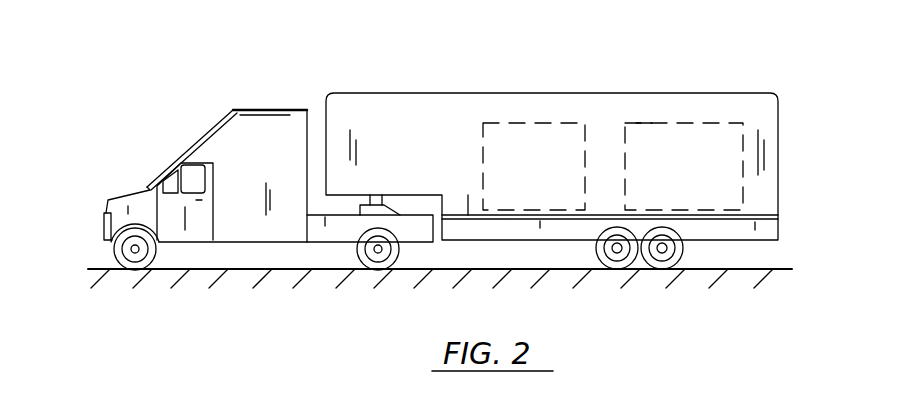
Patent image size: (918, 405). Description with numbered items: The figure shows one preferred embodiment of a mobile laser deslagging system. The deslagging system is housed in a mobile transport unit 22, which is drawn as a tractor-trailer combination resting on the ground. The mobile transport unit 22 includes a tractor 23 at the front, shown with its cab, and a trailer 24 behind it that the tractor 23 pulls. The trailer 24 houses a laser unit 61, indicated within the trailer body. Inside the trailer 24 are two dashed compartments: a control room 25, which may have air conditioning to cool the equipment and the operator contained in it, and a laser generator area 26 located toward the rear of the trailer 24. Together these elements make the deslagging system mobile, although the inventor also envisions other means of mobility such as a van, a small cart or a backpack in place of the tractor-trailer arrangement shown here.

The mobile transport unit 22 is at (808, 22).
The tractor 23 is at (200, 140).
The trailer 24 is at (448, 60).
The control room 25 is at (557, 122).
The laser generator area 26 is at (668, 122).
The laser unit 61 is at (648, 108).